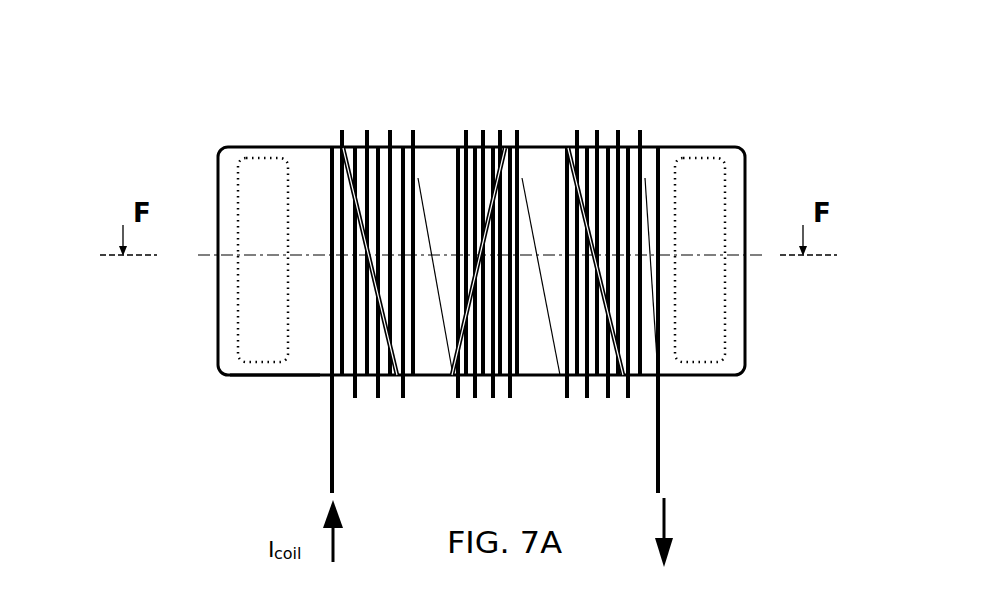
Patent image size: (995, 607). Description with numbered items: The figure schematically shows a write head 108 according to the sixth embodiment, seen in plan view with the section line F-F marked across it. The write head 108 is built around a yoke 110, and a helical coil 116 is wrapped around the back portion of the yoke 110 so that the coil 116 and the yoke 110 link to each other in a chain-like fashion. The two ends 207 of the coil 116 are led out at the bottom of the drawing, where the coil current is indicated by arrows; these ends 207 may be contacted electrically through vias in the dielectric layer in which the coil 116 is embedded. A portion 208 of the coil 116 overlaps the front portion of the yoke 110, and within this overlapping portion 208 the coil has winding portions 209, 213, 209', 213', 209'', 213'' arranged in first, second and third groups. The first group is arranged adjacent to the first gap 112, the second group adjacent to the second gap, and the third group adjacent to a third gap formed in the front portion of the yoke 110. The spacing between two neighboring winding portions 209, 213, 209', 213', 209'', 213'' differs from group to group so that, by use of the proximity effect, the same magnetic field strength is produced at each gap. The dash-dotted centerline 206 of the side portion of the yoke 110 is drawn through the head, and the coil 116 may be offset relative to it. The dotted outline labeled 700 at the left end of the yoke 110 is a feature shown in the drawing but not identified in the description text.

The write head 108 is at (186, 90).
The yoke 110 is at (750, 335).
The coil 116 is at (383, 403).
The ends of the coil 207 is at (328, 487).
The portion of the coil 208 is at (306, 364).
The winding portion 209 is at (377, 213).
The winding portion 213 is at (437, 205).
The winding portion 209' is at (478, 312).
The winding portion 213' is at (538, 331).
The winding portion 209'' is at (603, 209).
The winding portion 213'' is at (678, 221).
The pole region 700 is at (258, 255).
The first gap 112 is at (383, 604).
The centerline of the side portion 206 is at (608, 604).